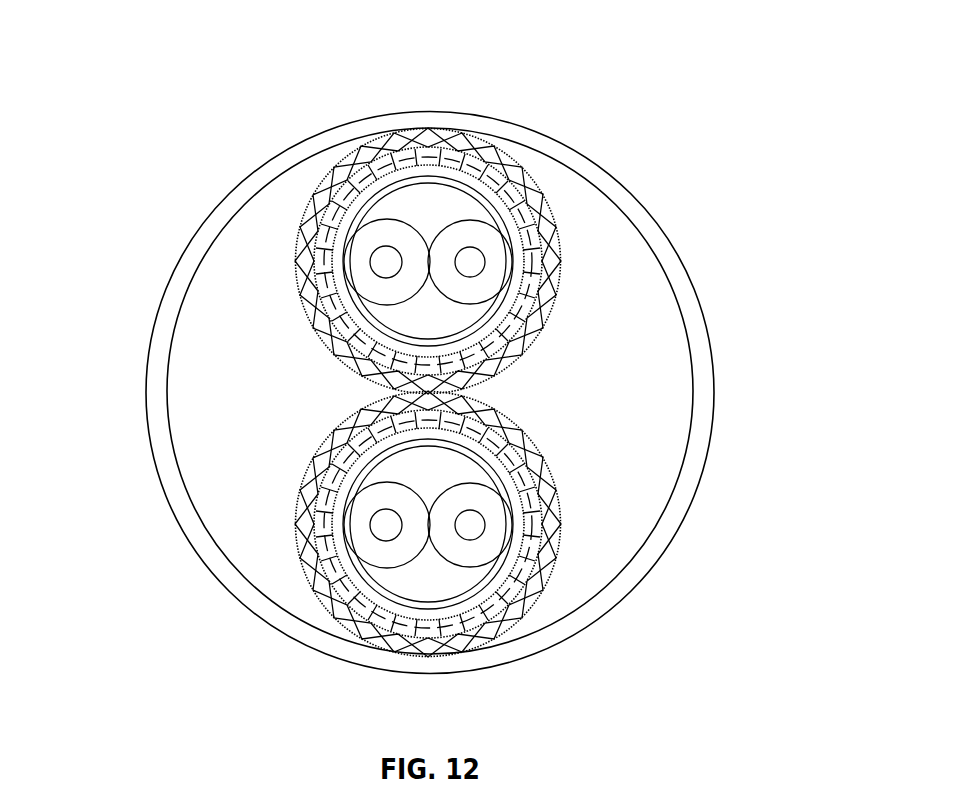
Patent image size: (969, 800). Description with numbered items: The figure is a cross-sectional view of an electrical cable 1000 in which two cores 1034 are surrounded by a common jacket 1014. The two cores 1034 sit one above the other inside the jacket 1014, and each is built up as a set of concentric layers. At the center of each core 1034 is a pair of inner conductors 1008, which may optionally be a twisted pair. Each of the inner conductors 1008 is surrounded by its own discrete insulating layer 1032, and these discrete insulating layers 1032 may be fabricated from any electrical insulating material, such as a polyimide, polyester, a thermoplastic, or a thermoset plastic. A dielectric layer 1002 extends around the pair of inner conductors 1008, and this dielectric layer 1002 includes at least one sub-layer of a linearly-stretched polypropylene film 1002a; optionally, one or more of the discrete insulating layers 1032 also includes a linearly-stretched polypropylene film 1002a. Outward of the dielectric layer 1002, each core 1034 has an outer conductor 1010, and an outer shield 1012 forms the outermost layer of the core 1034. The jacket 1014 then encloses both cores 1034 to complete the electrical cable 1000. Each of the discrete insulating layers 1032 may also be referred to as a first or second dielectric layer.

The electrical cable 1000 is at (643, 92).
The dielectric layer 1002 is at (430, 379).
The linearly-stretched polypropylene film 1002a is at (477, 183).
The inner conductors 1008 is at (469, 244).
The outer conductor 1010 is at (389, 147).
The outer shield 1012 is at (530, 167).
The jacket 1014 is at (652, 556).
The discrete insulating layer 1032 is at (493, 268).
The core 1034 is at (564, 283).